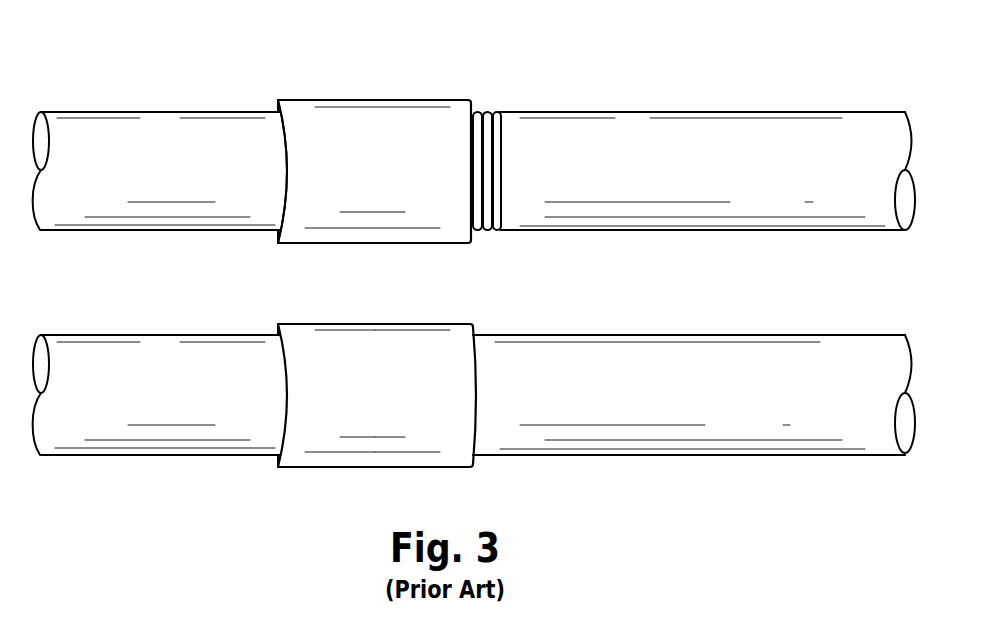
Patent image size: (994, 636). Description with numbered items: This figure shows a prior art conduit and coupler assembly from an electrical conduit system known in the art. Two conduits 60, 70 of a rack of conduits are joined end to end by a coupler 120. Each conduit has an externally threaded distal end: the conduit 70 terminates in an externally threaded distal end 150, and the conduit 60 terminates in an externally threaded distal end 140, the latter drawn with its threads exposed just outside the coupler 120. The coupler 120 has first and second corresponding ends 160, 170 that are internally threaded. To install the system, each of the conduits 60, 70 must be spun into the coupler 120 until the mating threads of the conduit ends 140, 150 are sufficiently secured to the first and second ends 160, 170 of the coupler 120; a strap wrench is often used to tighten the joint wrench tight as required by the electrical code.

The conduit 70 is at (206, 112).
The conduit 60 is at (562, 135).
The coupler 120 is at (388, 100).
The externally threaded distal end 150 is at (278, 100).
The externally threaded distal end 140 is at (480, 112).
The second end of coupler 170 is at (317, 418).
The first end of coupler 160 is at (426, 428).